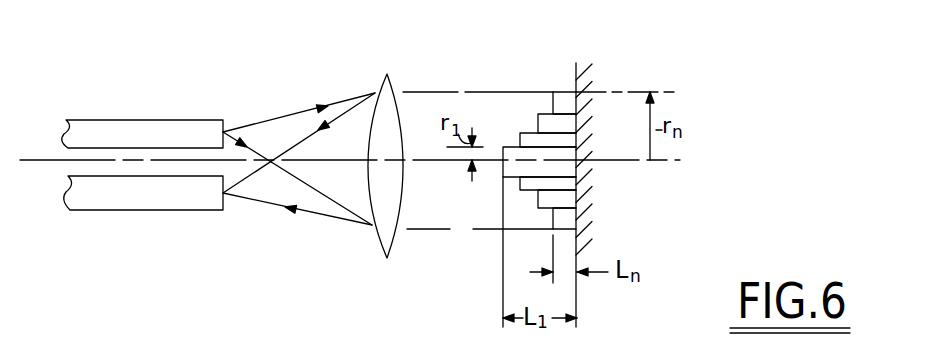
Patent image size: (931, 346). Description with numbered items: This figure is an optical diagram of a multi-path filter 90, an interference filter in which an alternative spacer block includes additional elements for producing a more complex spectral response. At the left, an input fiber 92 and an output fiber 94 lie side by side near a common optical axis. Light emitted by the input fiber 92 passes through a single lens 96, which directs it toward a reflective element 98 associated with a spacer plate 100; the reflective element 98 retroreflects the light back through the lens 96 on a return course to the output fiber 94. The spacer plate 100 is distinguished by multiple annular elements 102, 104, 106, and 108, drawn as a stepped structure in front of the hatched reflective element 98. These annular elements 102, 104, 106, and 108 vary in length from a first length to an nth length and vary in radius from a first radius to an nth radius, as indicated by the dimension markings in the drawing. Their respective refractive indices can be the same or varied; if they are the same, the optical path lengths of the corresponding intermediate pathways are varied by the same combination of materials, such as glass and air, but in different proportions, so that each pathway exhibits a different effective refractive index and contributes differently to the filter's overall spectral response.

The multi-path filter 90 is at (256, 53).
The input fiber 92 is at (147, 125).
The output fiber 94 is at (167, 207).
The lens 96 is at (381, 246).
The reflective element 98 is at (578, 194).
The spacer plate 100 is at (565, 91).
The annular element 102 is at (503, 170).
The annular element 104 is at (521, 140).
The annular element 106 is at (540, 125).
The annular element 108 is at (568, 222).